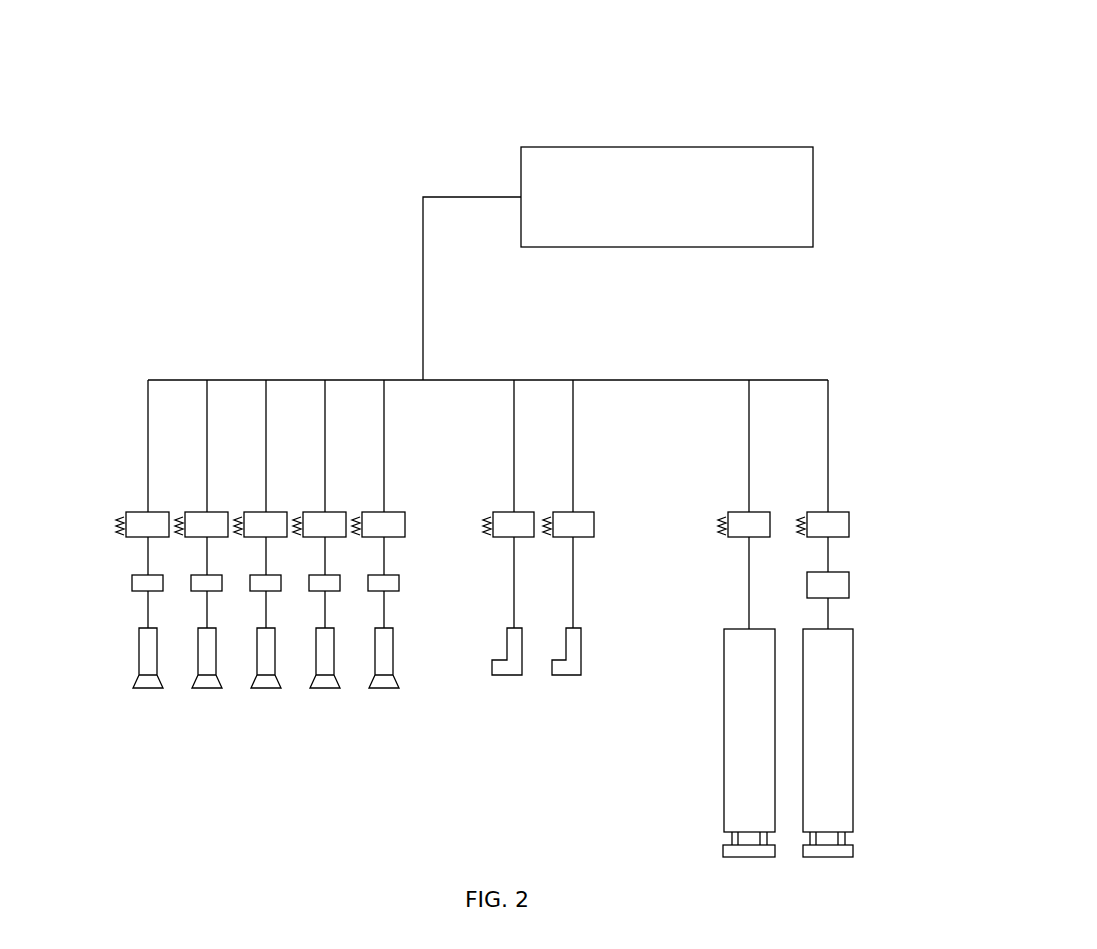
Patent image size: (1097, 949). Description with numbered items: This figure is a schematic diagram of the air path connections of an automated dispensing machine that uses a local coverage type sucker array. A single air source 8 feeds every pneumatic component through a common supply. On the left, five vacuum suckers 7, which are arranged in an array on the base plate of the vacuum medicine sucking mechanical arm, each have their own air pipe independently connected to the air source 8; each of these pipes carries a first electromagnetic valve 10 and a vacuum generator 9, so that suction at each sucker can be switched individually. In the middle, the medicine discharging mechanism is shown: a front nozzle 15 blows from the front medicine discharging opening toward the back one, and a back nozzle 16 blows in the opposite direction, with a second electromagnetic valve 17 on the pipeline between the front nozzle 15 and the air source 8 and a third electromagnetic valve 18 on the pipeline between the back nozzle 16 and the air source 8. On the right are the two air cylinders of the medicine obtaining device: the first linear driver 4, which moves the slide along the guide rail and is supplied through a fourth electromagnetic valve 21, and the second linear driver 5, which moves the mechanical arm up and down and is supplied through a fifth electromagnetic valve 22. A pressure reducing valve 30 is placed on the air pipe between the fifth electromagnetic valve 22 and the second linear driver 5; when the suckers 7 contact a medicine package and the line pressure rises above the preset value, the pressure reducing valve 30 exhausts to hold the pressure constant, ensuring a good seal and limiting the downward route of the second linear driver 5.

The air source 8 is at (642, 180).
The first electromagnetic valve 10 is at (140, 527).
The vacuum generator 9 is at (137, 585).
The vacuum sucker 7 is at (145, 657).
The second electromagnetic valve 17 is at (507, 525).
The third electromagnetic valve 18 is at (578, 525).
The front nozzle 15 is at (508, 668).
The back nozzle 16 is at (568, 668).
The fourth electromagnetic valve 21 is at (742, 525).
The fifth electromagnetic valve 22 is at (835, 525).
The pressure reducing valve 30 is at (837, 588).
The first linear driver 4 is at (745, 745).
The second linear driver 5 is at (827, 747).